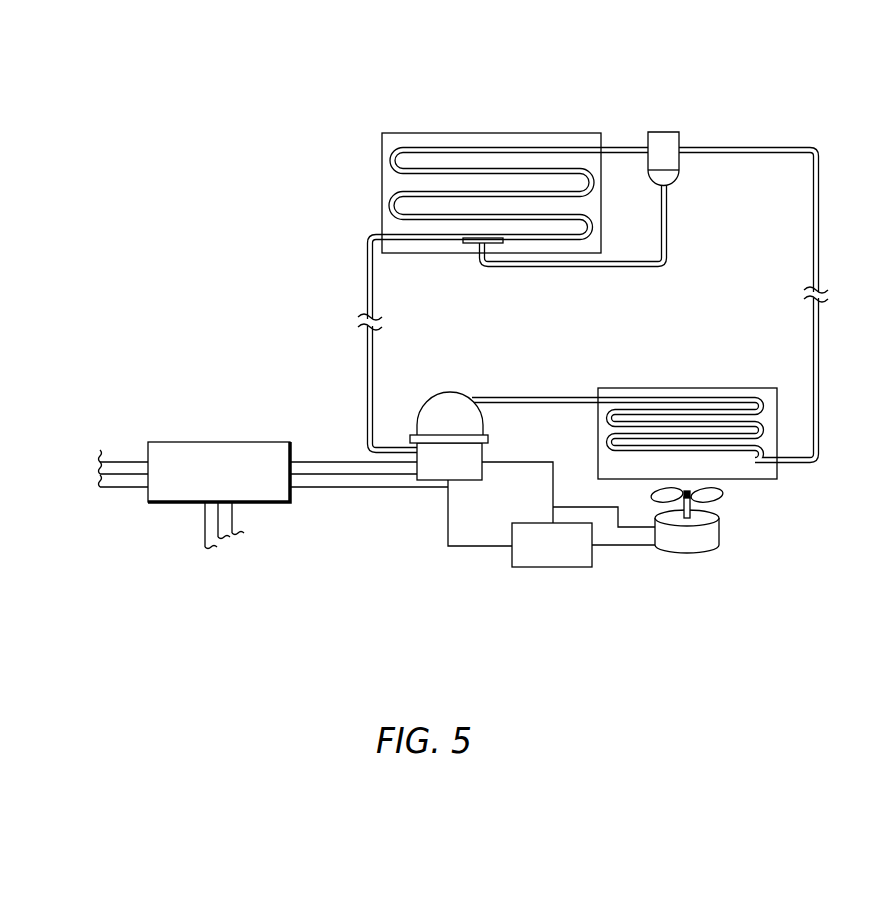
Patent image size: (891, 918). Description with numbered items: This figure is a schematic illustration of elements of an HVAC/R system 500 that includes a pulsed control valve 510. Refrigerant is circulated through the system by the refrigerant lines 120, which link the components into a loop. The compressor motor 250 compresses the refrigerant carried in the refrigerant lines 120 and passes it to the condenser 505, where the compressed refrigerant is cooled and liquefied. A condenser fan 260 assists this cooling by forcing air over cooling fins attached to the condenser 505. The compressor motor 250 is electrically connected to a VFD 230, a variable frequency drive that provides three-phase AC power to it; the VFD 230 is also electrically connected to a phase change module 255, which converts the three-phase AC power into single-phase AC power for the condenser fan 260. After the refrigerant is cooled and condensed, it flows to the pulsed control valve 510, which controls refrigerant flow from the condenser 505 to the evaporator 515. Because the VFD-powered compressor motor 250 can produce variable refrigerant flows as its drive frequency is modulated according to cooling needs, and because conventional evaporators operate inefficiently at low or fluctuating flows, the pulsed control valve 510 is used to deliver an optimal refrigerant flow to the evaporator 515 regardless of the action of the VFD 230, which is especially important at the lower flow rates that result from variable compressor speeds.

The HVAC/R system 500 is at (122, 110).
The evaporator 515 is at (462, 133).
The pulsed control valve 510 is at (663, 131).
The refrigerant lines 120 is at (819, 222).
The condenser 505 is at (687, 388).
The VFD 230 is at (218, 442).
The compressor motor 250 is at (483, 455).
The phase change module 255 is at (552, 568).
The condenser fan 260 is at (719, 531).